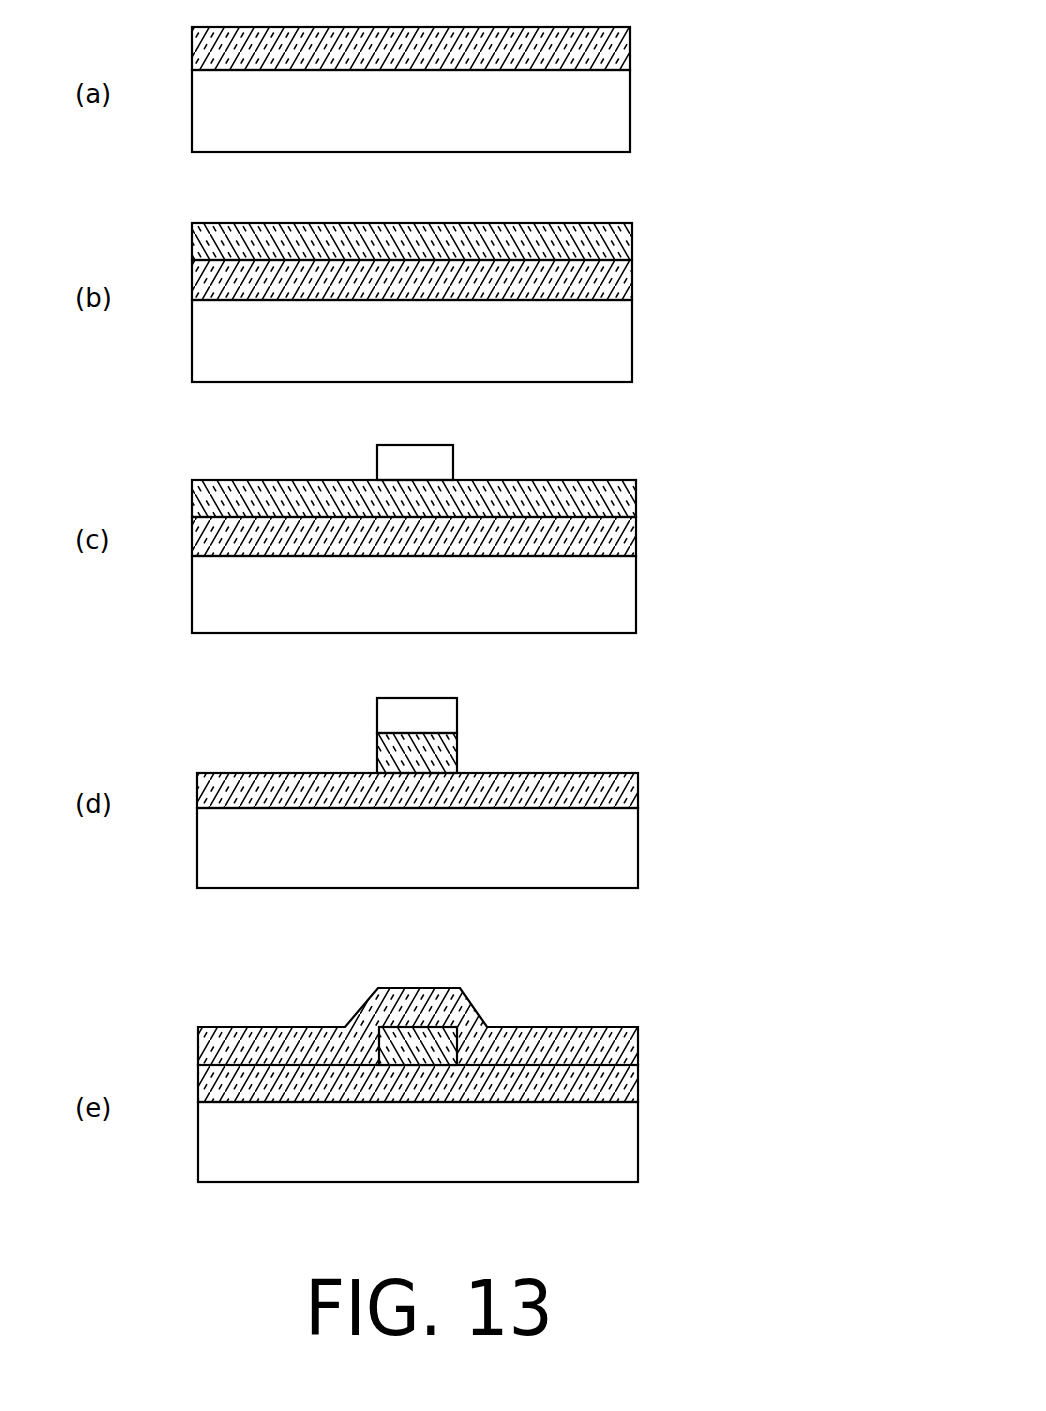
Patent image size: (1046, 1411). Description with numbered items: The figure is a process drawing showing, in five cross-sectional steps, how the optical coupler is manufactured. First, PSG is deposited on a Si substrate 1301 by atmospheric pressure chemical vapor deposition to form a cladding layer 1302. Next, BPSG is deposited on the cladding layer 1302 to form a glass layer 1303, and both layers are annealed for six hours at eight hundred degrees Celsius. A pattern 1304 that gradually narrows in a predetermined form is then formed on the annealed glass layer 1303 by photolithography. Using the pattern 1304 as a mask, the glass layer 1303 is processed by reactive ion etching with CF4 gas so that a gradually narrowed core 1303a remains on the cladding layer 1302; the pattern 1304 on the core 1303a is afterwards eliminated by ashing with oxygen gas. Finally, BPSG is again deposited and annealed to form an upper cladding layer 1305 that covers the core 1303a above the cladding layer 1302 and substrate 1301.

The Si substrate 1301 is at (612, 112).
The cladding layer 1302 is at (612, 50).
The glass layer 1303 is at (612, 241).
The core 1303a is at (438, 752).
The pattern 1304 is at (438, 458).
The upper cladding layer 1305 is at (380, 1008).